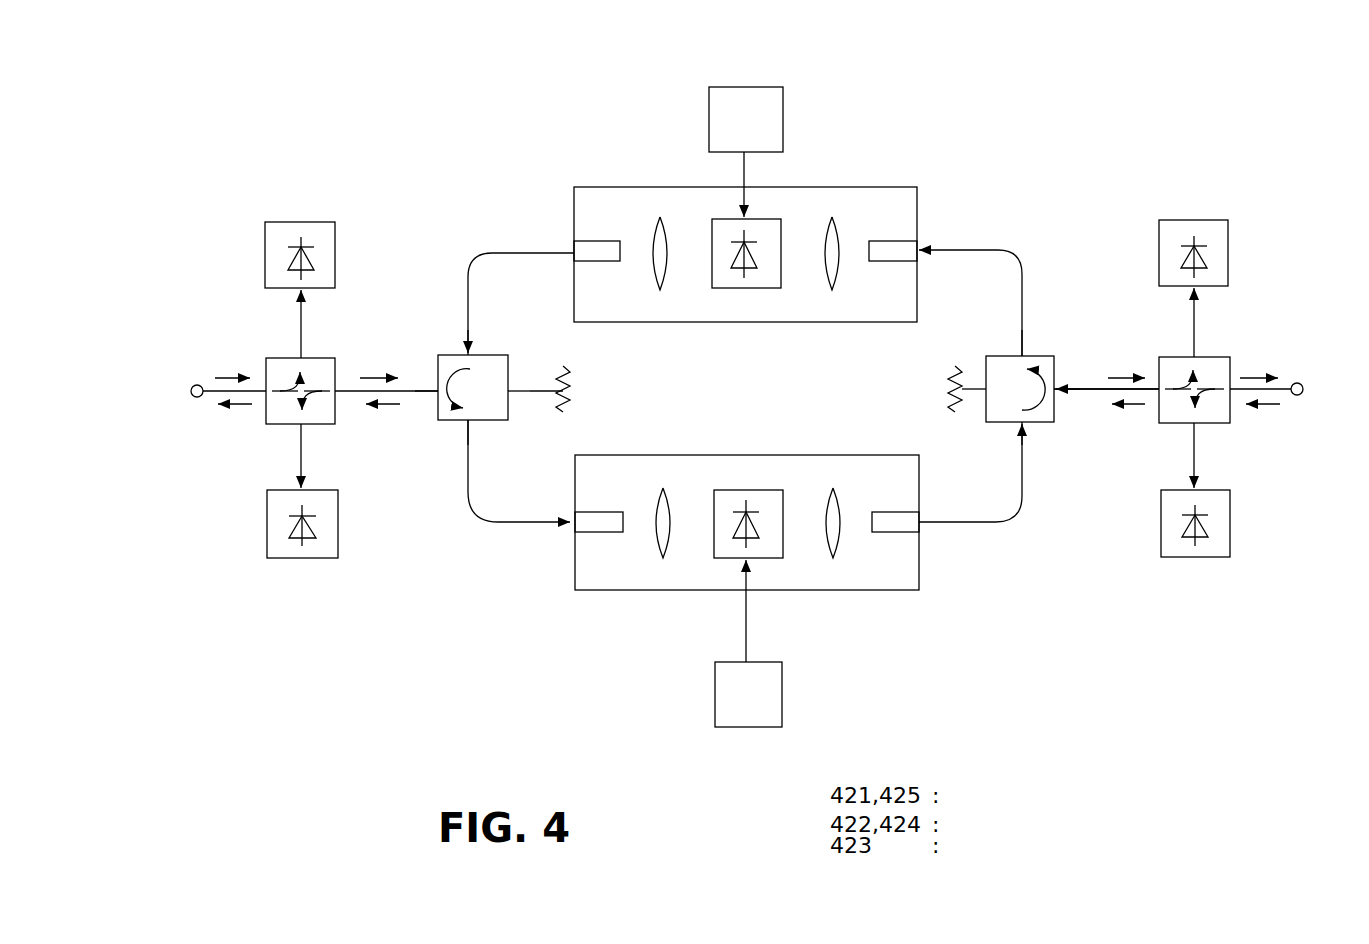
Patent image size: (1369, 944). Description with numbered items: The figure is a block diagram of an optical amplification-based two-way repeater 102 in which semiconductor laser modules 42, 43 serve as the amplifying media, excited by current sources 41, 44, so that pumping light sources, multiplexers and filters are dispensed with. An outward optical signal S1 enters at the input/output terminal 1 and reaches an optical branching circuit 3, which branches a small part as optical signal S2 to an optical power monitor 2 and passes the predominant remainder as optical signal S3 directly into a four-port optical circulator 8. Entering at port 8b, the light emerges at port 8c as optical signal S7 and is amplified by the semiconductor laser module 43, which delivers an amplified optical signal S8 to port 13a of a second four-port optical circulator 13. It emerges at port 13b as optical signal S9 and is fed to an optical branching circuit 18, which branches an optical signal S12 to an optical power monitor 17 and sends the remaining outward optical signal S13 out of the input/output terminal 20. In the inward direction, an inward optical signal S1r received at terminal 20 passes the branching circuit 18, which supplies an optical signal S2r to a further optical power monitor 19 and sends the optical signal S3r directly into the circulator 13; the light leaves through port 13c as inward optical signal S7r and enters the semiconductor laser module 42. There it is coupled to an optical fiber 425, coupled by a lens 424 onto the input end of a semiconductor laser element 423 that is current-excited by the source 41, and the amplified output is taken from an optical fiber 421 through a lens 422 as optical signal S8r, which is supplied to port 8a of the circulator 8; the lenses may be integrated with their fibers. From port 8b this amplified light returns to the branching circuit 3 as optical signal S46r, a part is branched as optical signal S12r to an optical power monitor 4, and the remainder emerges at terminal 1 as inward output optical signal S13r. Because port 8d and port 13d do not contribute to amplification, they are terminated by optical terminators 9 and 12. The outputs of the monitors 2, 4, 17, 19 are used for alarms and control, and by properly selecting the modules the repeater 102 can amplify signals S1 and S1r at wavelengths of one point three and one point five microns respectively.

The optical amplification-based two-way repeater 102 is at (282, 55).
The input/output terminal 1 is at (193, 397).
The optical power monitor 2 is at (282, 222).
The optical branching circuit 3 is at (322, 356).
The optical power monitor 4 is at (284, 558).
The four-port optical circulator 8 is at (510, 368).
The port 8a is at (469, 355).
The port 8b is at (438, 398).
The port 8c is at (466, 421).
The port 8d is at (509, 394).
The optical terminator 9 is at (575, 380).
The optical terminator 12 is at (955, 412).
The four-port optical circulator 13 is at (1037, 356).
The port 13a is at (1030, 423).
The port 13b is at (1055, 372).
The circulator port 13c is at (1019, 356).
The port 13d is at (985, 391).
The optical power monitor 17 is at (1180, 220).
The optical branching circuit 18 is at (1214, 354).
The optical power monitor 19 is at (1177, 558).
The input/output terminal 20 is at (1300, 395).
The current source 41 is at (728, 87).
The semiconductor laser module 42 is at (800, 187).
The optical fiber 421 is at (596, 241).
The lens 422 is at (660, 218).
The semiconductor laser element 423 is at (758, 289).
The lens 424 is at (840, 233).
The optical fiber 425 is at (904, 240).
The semiconductor laser module 43 is at (800, 592).
The current source 44 is at (782, 696).
The outward optical signal S1 is at (232, 364).
The optical signal S2 is at (300, 330).
The optical signal S3 is at (386, 370).
The optical signal S7 is at (517, 523).
The amplified optical signal S8 is at (1012, 522).
The optical signal S9 is at (1106, 369).
The optical signal S12 is at (1193, 318).
The outward optical signal S13 is at (1262, 364).
The inward optical signal S1r is at (1261, 420).
The reflected signal S2r is at (1195, 446).
The optical signal S3r is at (1124, 420).
The inward optical signal S7r is at (955, 250).
The optical signal S8r is at (528, 253).
The optical signal S12r is at (300, 460).
The inward output optical signal S13r is at (236, 420).
The reflected signal S46r is at (374, 420).